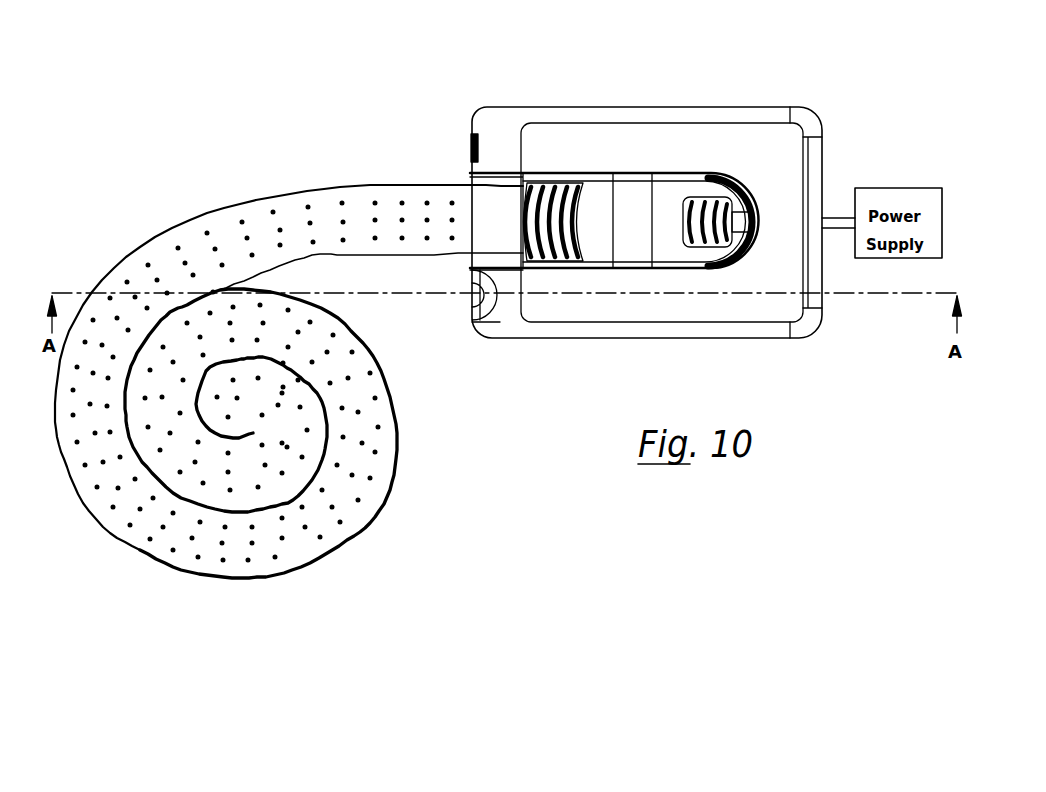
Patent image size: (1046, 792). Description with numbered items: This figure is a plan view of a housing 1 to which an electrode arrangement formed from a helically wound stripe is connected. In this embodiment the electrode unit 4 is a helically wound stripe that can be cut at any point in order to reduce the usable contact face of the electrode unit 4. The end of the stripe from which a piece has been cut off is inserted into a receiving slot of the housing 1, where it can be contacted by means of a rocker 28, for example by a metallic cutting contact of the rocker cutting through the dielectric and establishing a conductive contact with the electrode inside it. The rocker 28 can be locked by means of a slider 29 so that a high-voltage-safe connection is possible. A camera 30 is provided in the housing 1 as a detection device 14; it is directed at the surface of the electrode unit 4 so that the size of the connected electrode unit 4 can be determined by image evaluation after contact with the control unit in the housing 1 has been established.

The housing 1 is at (626, 358).
The electrode unit 4 is at (202, 595).
The detection device 14 is at (452, 315).
The rocker 28 is at (592, 190).
The slider 29 is at (708, 203).
The camera 30 is at (492, 322).